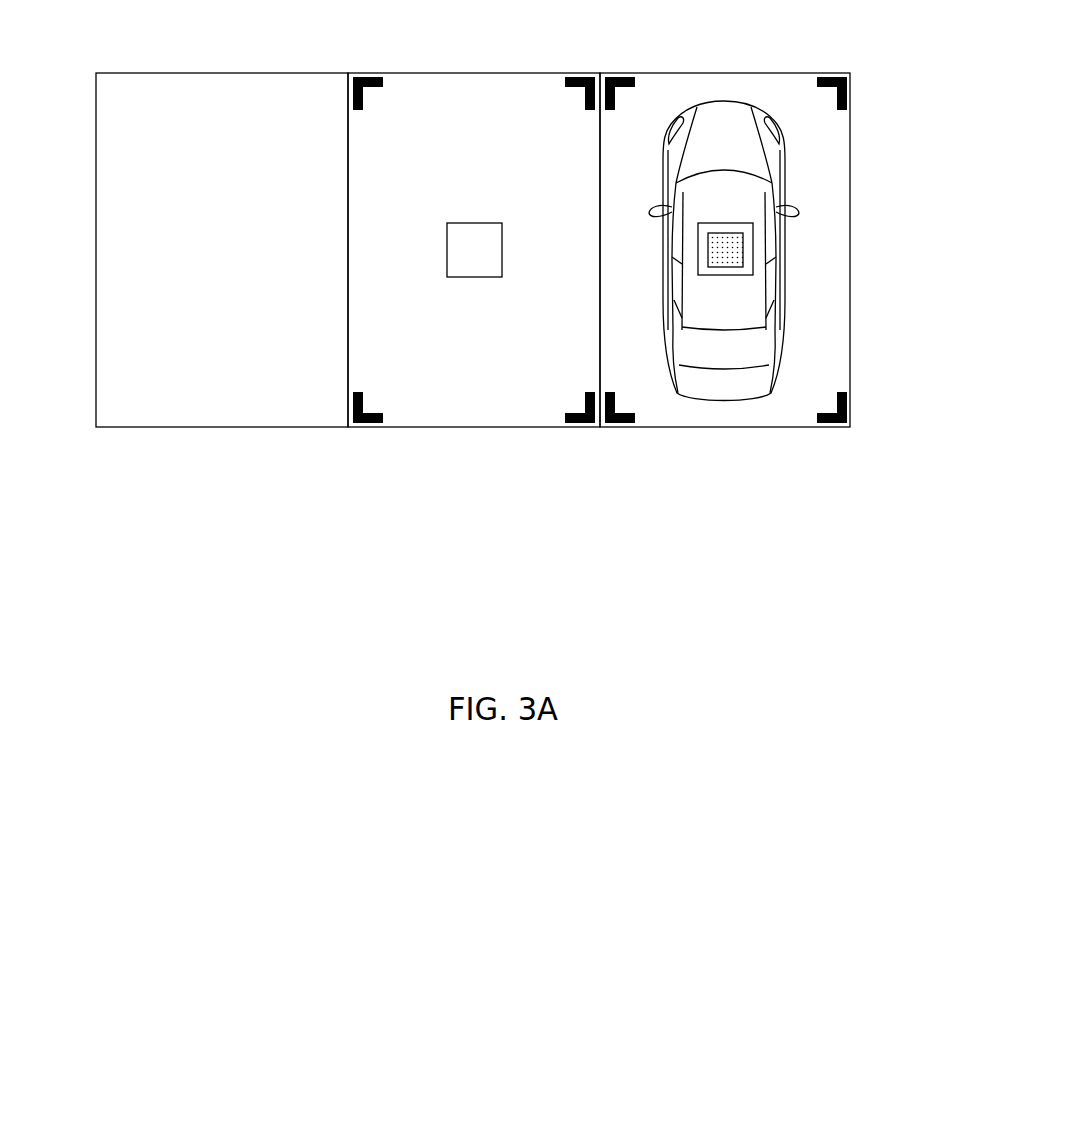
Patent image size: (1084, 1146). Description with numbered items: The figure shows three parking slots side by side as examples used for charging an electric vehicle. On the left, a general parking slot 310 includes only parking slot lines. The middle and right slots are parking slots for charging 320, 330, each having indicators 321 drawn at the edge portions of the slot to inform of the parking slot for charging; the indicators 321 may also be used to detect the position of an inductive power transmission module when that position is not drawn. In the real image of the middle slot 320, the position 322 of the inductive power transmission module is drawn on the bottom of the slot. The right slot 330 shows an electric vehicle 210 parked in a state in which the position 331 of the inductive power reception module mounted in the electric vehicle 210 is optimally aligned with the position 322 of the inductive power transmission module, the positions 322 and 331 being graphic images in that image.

The electric vehicle 210 is at (765, 328).
The general parking slot 310 is at (222, 427).
The parking slot for charging 320 is at (473, 427).
The indicator 321 is at (367, 425).
The position of the inductive power transmission module 322 is at (474, 238).
The parking slot for charging 330 is at (723, 427).
The position of the inductive power reception module 331 is at (745, 252).